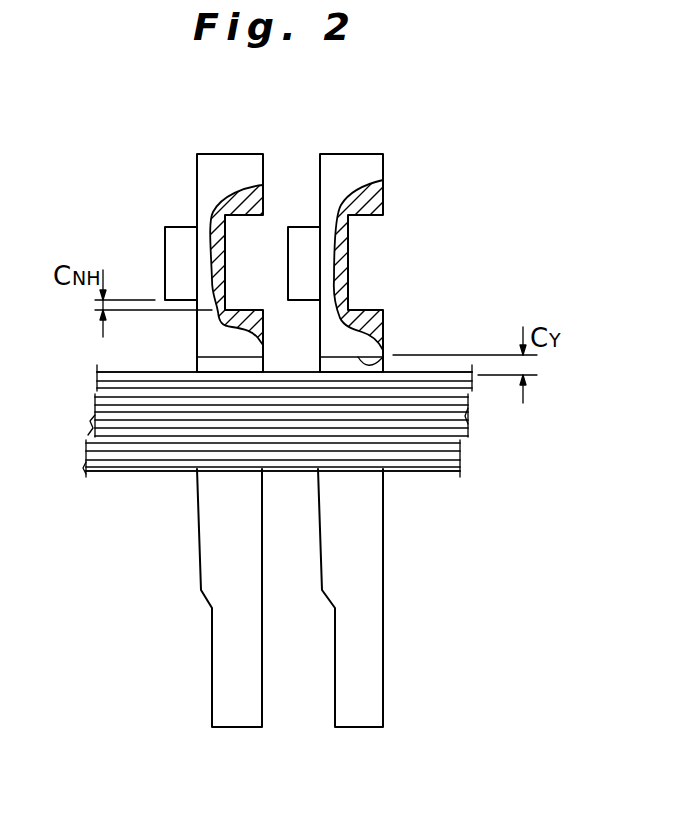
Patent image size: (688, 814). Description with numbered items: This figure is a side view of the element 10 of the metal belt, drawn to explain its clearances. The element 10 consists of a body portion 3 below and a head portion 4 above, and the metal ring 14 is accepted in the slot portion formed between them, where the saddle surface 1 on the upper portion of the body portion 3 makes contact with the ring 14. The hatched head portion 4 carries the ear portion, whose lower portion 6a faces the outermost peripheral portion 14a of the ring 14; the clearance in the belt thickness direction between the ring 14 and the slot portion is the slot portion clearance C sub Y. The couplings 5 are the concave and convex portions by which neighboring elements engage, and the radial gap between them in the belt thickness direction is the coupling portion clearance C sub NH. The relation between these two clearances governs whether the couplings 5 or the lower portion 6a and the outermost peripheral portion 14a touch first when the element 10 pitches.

The saddle surface 1 is at (350, 468).
The body portion 3 is at (363, 667).
The head portion 4 is at (383, 163).
The couplings 5 is at (293, 226).
The lower portion of the ear portion 6a is at (383, 355).
The element 10 is at (221, 146).
The ring 14 is at (453, 437).
The outermost peripheral portion of the ring 14a is at (452, 373).